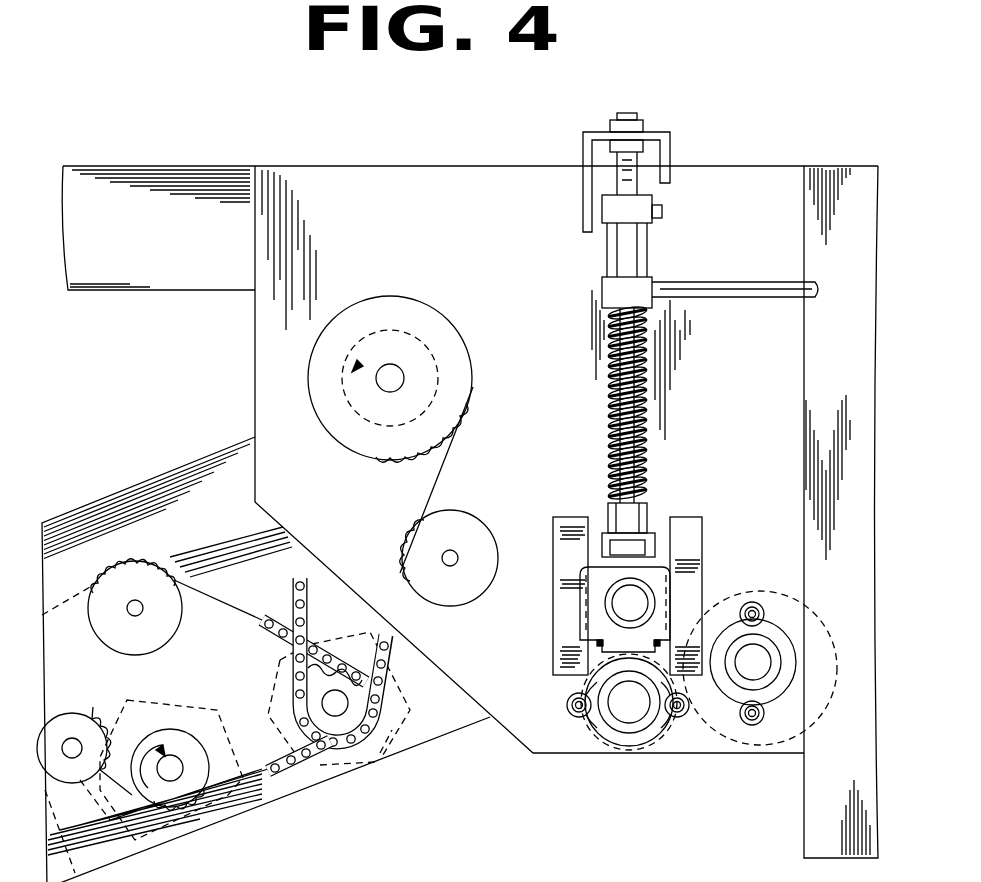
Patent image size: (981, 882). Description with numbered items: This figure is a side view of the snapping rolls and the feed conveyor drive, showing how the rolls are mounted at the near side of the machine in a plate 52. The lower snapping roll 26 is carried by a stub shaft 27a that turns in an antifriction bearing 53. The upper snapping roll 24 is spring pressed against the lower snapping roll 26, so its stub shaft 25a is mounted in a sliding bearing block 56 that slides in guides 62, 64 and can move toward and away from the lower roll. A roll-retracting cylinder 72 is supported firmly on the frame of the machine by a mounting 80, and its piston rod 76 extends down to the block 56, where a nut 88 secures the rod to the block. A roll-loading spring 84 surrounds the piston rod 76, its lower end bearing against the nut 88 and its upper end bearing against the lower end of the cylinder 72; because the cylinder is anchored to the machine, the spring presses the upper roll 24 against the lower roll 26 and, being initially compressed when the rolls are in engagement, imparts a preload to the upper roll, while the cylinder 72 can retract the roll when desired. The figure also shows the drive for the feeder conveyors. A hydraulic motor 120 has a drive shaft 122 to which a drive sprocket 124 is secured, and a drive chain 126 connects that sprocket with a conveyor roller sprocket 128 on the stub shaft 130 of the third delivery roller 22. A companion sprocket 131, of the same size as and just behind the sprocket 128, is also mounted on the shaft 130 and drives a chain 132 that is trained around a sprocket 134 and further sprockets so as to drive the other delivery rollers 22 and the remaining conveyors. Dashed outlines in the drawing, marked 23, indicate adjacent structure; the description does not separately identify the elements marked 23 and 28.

The delivery roller 22 is at (316, 770).
The guide members 23 is at (385, 785).
The upper snapping roll 24 is at (672, 578).
The stub shaft 25a is at (630, 606).
The lower snapping roll 26 is at (583, 732).
The stub shaft 27a is at (630, 708).
The bearing 28 is at (832, 614).
The plate 52 is at (756, 372).
The antifriction bearing 53 is at (660, 732).
The sliding bearing block 56 is at (580, 574).
The guide 62 is at (553, 525).
The guide 64 is at (702, 517).
The roll-retracting cylinder 72 is at (650, 247).
The piston rod 76 is at (650, 425).
The mounting 80 is at (583, 146).
The spring 84 is at (612, 418).
The nut 88 is at (612, 525).
The hydraulic motor 120 is at (422, 340).
The drive shaft 122 is at (390, 386).
The drive sprocket 124 is at (466, 406).
The drive chain 126 is at (293, 590).
The conveyor roller sprocket 128 is at (313, 697).
The stub shaft 130 is at (348, 703).
The sprocket 131 is at (312, 672).
The chain 132 is at (262, 628).
The sprocket 134 is at (222, 798).